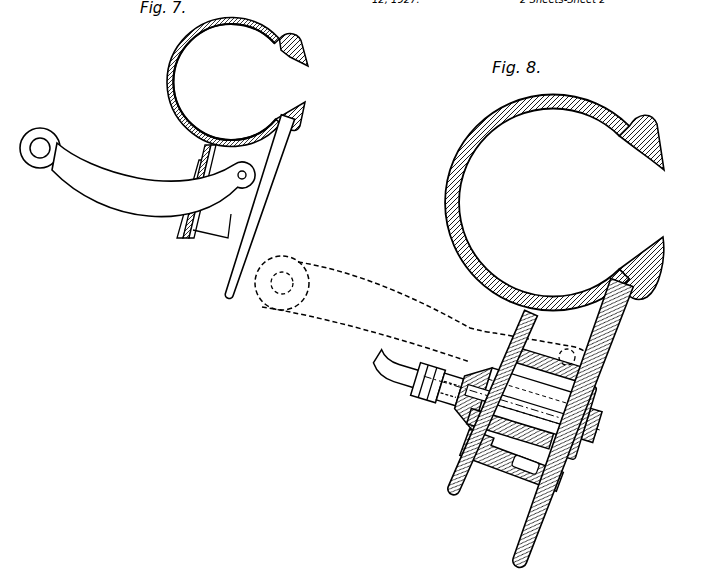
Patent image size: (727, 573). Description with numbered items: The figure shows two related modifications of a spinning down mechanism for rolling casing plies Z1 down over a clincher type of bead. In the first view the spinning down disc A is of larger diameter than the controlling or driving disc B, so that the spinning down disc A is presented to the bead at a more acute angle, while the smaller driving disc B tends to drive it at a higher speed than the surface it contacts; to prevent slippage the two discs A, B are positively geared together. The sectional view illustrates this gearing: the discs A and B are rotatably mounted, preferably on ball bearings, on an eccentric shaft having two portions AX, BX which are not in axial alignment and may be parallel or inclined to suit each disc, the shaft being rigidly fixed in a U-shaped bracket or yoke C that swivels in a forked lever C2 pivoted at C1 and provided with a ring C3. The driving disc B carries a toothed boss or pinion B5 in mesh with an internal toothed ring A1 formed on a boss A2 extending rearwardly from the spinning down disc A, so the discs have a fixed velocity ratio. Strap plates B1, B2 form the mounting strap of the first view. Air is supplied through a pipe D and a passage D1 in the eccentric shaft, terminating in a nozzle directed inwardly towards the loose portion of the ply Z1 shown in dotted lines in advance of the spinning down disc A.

In FIG. 7, the spinning down disc A is at (228, 301).
In FIG. 8, the spinning down disc A is at (535, 537).
In FIG. 8, the internal toothed ring A1 is at (537, 312).
In FIG. 8, the boss A2 is at (612, 323).
In FIG. 8, the eccentric shaft portion AX is at (600, 418).
In FIG. 7, the driving disc B is at (181, 240).
In FIG. 8, the driving disc B is at (459, 491).
In FIG. 7, the strap plate B1 is at (191, 240).
In FIG. 7, the strap plate B2 is at (210, 164).
In FIG. 8, the toothed boss or pinion B5 is at (508, 463).
In FIG. 8, the eccentric shaft portion BX is at (482, 411).
In FIG. 7, the U-shaped bracket or yoke C is at (222, 233).
In FIG. 8, the U-shaped bracket or yoke C is at (494, 412).
In FIG. 7, the pivot C1 is at (246, 175).
In FIG. 8, the pivot C1 is at (567, 349).
In FIG. 7, the forked lever C2 is at (83, 178).
In FIG. 8, the forked lever C2 is at (349, 296).
In FIG. 7, the ring C3 is at (45, 143).
In FIG. 8, the ring C3 is at (287, 270).
In FIG. 8, the pipe D is at (397, 377).
In FIG. 8, the passage D1 is at (598, 399).
In FIG. 7, the casing or casing plies Z1 is at (249, 24).
In FIG. 8, the casing or casing plies Z1 is at (566, 100).